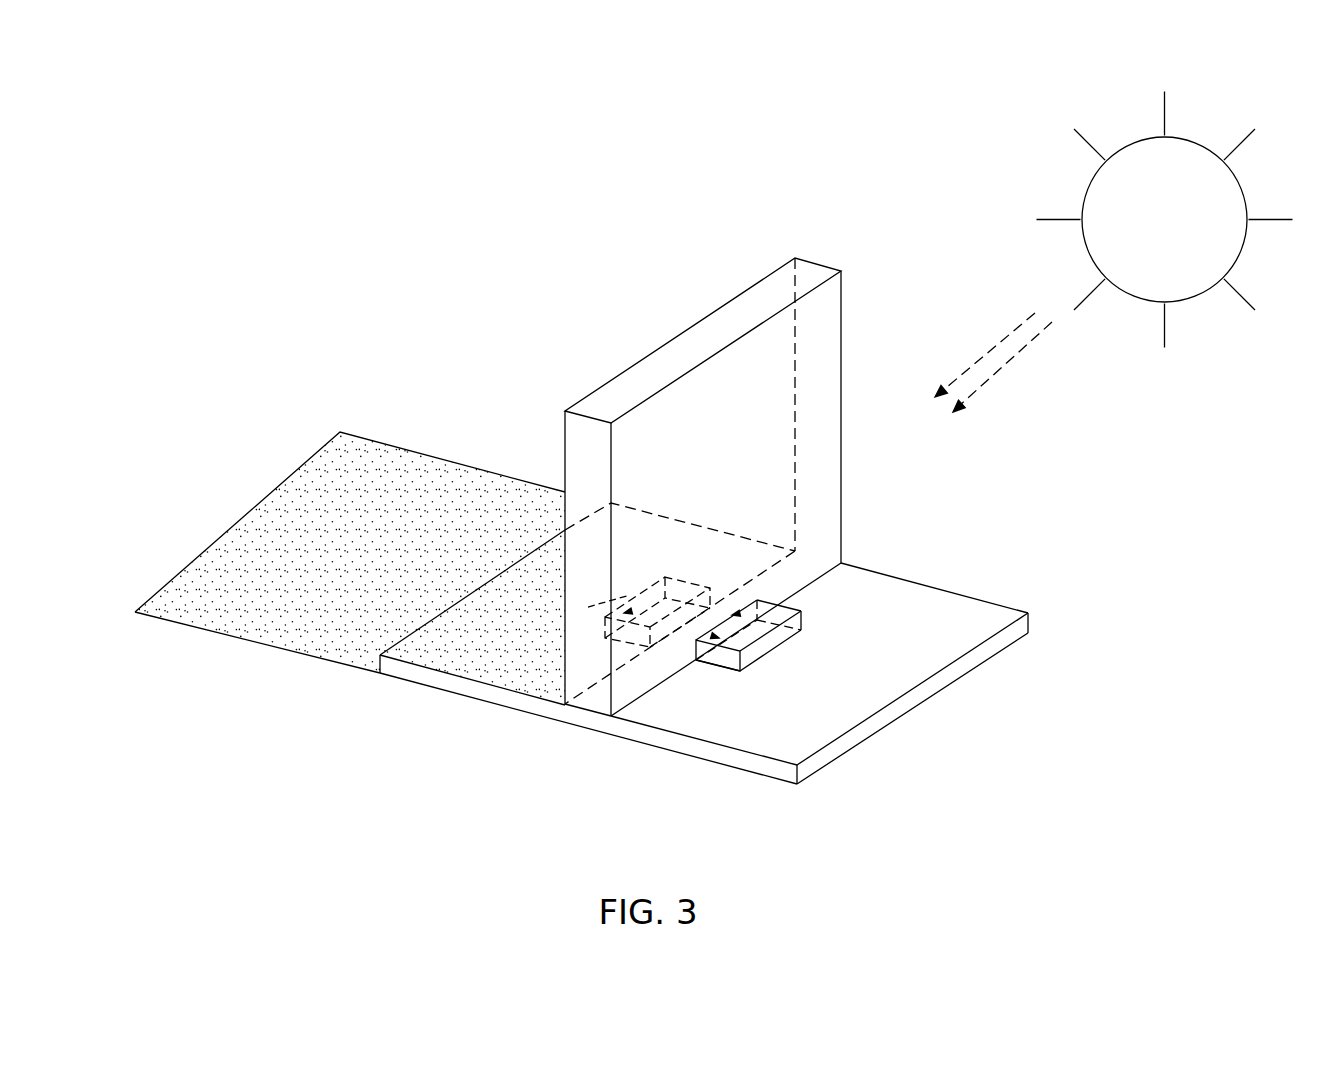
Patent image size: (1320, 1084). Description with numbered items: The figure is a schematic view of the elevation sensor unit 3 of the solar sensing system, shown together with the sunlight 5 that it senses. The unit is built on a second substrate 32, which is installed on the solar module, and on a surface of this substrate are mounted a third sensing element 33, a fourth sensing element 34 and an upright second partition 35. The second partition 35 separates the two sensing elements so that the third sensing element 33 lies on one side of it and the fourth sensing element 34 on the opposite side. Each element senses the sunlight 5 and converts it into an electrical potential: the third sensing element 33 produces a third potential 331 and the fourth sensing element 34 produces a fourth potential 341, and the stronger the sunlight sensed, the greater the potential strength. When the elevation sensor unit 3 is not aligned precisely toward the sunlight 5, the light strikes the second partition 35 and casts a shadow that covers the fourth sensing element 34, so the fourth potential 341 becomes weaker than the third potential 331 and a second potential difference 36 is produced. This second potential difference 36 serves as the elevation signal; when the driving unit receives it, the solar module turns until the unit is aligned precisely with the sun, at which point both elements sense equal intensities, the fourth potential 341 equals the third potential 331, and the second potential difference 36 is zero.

The elevation sensor unit 3 is at (345, 270).
The sunlight 5 is at (1113, 183).
The second substrate 32 is at (918, 641).
The third sensing element 33 is at (728, 662).
The third potential 331 is at (775, 651).
The fourth sensing element 34 is at (632, 633).
The fourth potential 341 is at (630, 594).
The second partition 35 is at (738, 321).
The second potential difference 36 is at (693, 631).